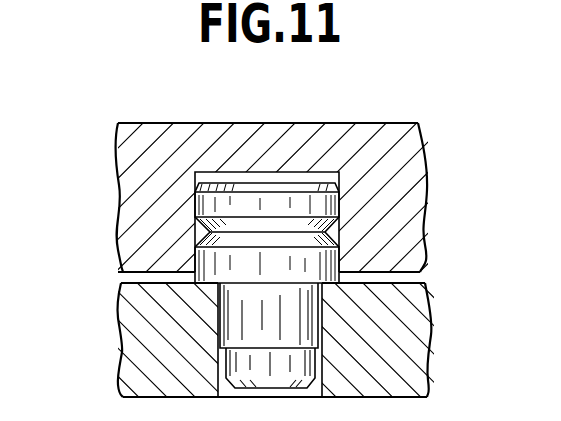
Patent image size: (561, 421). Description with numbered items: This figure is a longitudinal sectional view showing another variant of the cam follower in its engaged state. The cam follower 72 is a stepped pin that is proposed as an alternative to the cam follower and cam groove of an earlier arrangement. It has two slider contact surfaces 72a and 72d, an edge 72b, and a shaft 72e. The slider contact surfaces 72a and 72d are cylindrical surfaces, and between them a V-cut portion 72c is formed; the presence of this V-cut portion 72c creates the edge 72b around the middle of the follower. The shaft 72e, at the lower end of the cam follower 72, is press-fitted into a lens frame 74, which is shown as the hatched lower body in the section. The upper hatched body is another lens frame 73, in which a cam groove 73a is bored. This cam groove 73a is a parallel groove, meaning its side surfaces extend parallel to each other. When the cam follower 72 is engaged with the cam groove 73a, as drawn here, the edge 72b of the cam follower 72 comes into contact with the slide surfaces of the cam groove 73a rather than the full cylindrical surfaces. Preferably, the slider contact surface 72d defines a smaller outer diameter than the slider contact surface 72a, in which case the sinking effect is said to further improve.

The cam follower 72 is at (273, 182).
The slider contact surface 72a is at (340, 203).
The edge 72b is at (340, 220).
The V-cut portion 72c is at (340, 243).
The slider contact surface 72d is at (340, 277).
The shaft 72e is at (218, 320).
The lens frame 73 is at (383, 135).
The cam groove 73a is at (340, 183).
The lens frame 74 is at (400, 372).